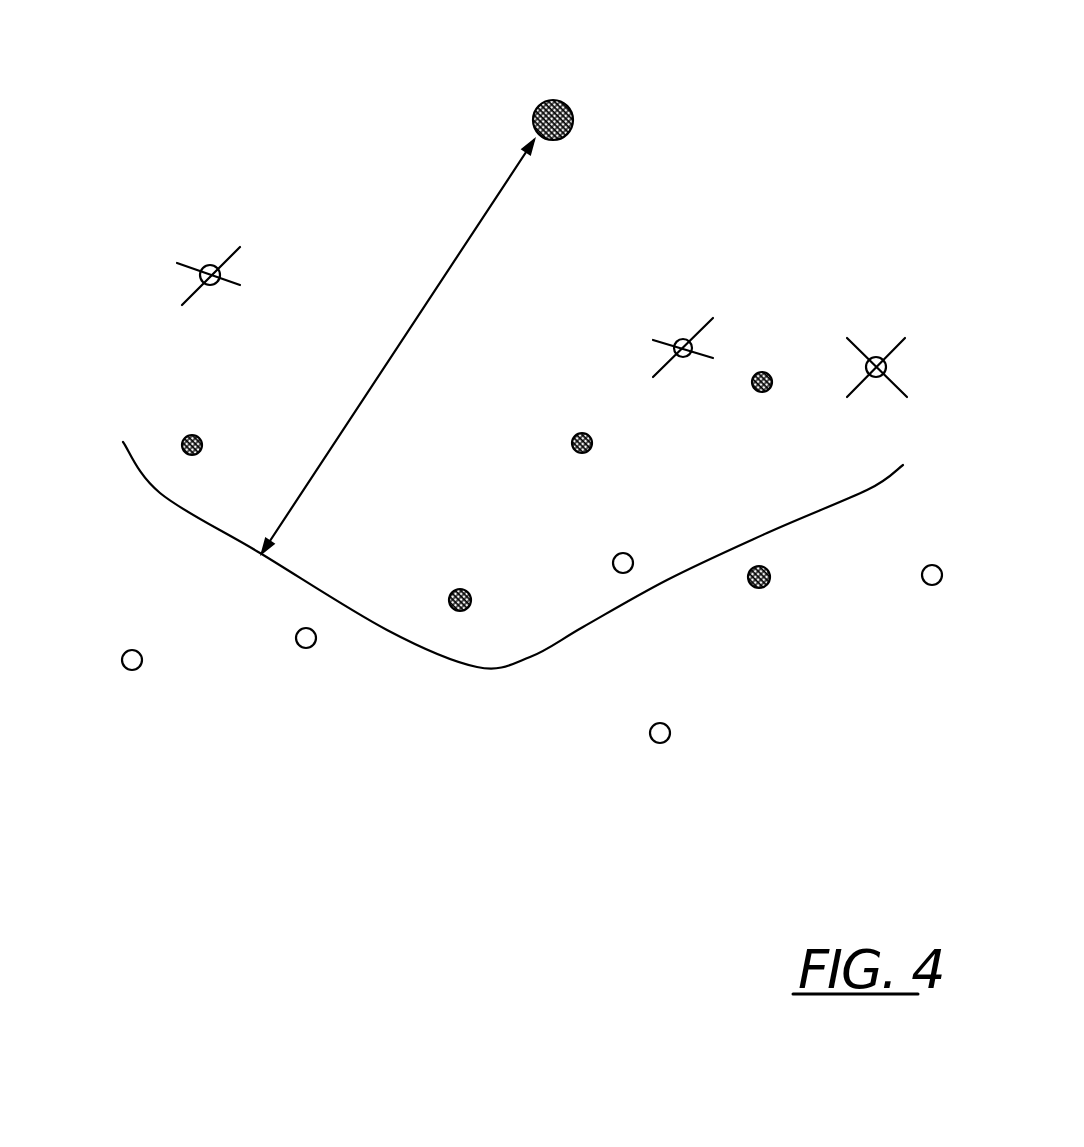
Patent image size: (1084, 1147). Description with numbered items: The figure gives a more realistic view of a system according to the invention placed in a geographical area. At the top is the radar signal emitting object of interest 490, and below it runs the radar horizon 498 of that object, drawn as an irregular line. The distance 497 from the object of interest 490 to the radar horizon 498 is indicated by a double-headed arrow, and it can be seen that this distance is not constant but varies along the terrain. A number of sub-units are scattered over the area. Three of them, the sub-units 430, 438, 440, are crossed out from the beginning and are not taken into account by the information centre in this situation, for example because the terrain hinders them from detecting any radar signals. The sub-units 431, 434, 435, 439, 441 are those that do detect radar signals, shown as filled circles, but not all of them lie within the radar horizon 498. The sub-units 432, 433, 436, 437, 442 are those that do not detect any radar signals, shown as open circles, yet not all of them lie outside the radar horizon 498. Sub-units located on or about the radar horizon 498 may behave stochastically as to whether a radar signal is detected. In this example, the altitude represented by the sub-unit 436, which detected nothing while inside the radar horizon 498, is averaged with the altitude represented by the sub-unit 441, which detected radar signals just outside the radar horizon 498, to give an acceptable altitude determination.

The radar signal emitting object of interest 490 is at (567, 97).
The sub-unit 430 is at (210, 262).
The sub-unit 431 is at (182, 432).
The distance 497 is at (405, 332).
The sub-unit 435 is at (583, 427).
The sub-unit 438 is at (682, 336).
The sub-unit 439 is at (760, 368).
The sub-unit 440 is at (875, 352).
The sub-unit 434 is at (458, 585).
The sub-unit 436 is at (625, 549).
The sub-unit 432 is at (128, 672).
The sub-unit 433 is at (303, 652).
The sub-unit 437 is at (657, 748).
The sub-unit 441 is at (756, 592).
The radar horizon 498 is at (870, 497).
The sub-unit 442 is at (928, 592).